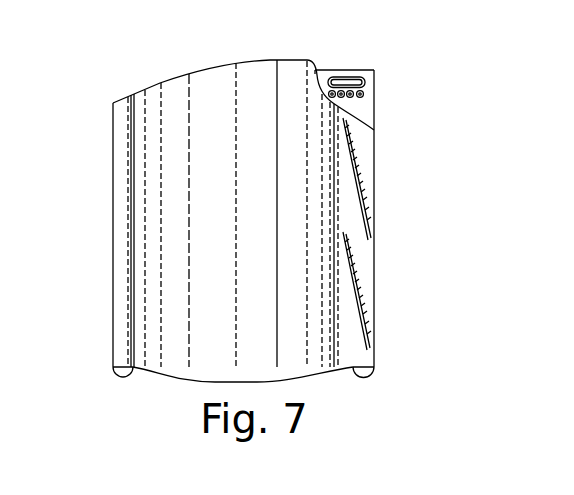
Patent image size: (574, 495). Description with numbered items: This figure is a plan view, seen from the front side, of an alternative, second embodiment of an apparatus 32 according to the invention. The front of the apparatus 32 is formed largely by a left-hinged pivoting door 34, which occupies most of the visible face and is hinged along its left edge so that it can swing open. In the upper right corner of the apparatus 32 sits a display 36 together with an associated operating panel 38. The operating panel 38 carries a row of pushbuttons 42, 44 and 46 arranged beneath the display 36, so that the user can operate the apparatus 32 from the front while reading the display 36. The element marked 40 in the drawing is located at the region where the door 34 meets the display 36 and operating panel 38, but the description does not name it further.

The apparatus 32 is at (152, 82).
The left-hinged pivoting door 34 is at (203, 221).
The display 36 is at (353, 72).
The operating panel 38 is at (375, 82).
The recess 40 is at (320, 76).
The pushbutton 42 is at (345, 100).
The pushbutton 44 is at (356, 99).
The pushbutton 46 is at (367, 89).